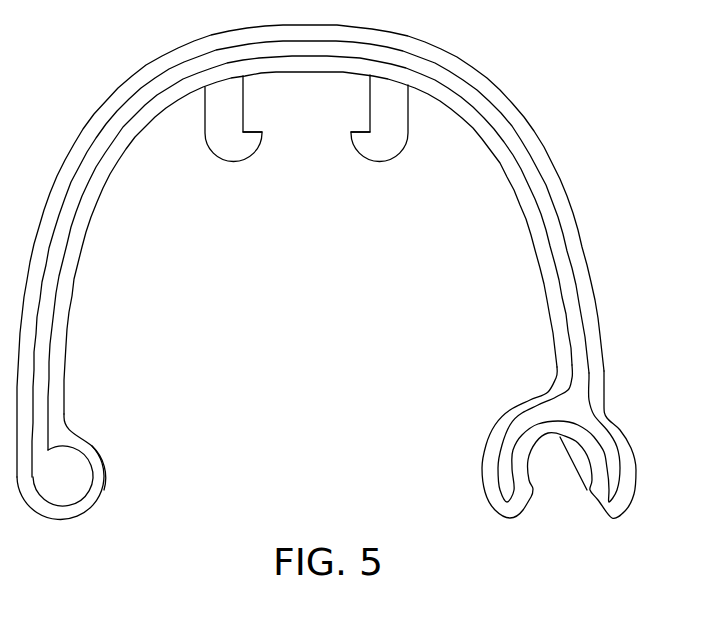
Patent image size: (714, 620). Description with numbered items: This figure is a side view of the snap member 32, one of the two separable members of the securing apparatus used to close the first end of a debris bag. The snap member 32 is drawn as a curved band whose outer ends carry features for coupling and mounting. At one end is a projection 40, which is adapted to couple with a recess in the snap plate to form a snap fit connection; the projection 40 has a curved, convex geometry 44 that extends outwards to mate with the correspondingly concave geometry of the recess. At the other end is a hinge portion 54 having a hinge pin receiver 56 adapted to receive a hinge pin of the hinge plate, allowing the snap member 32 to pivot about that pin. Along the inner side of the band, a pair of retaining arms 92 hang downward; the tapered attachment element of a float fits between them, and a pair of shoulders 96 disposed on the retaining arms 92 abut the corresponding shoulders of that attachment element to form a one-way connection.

The snap member 32 is at (96, 152).
The projection 40 is at (67, 495).
The curved, convex geometry 44 is at (108, 457).
The hinge portion 54 is at (613, 457).
The hinge pin receiver 56 is at (555, 494).
The retaining arm 92 is at (213, 118).
The shoulder 96 is at (259, 126).